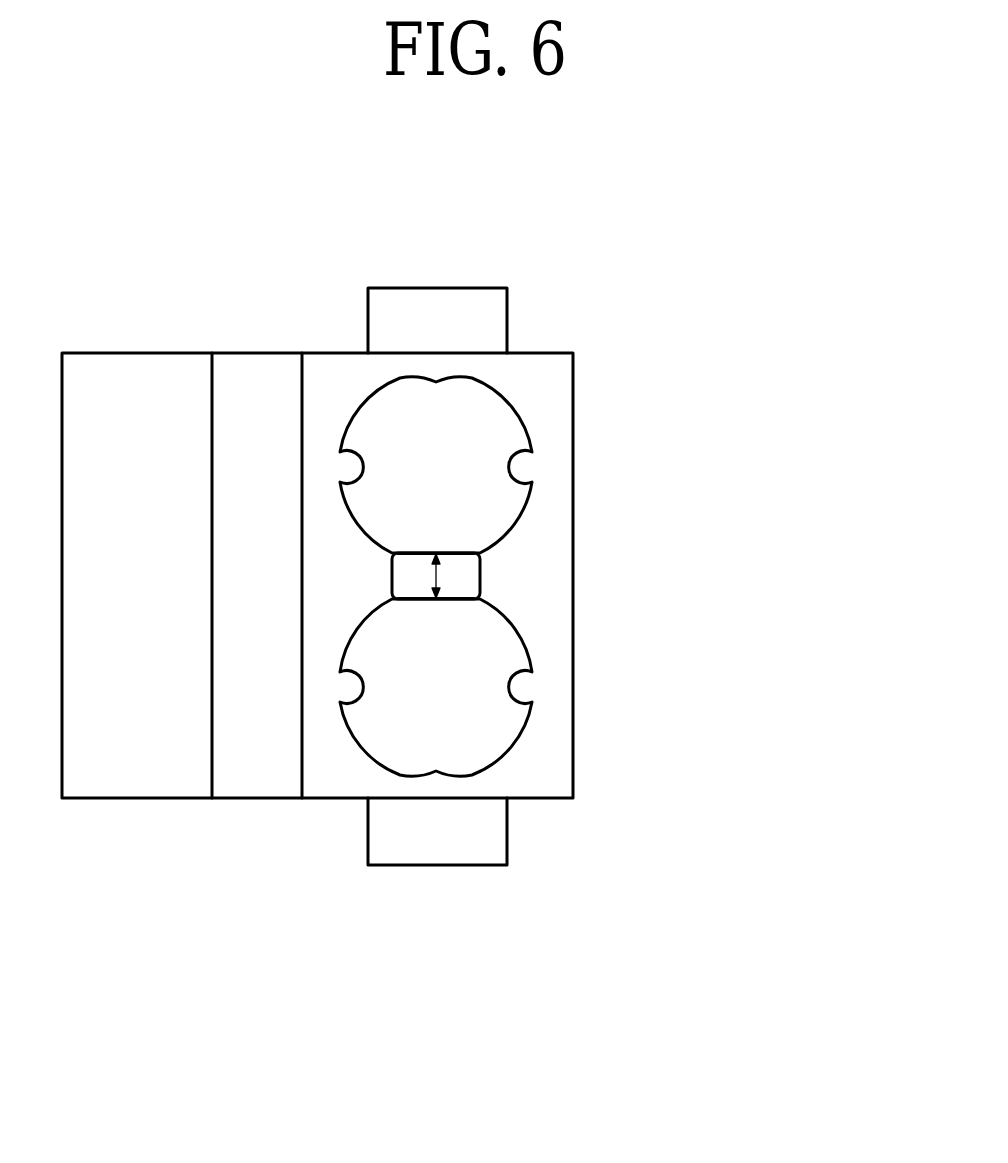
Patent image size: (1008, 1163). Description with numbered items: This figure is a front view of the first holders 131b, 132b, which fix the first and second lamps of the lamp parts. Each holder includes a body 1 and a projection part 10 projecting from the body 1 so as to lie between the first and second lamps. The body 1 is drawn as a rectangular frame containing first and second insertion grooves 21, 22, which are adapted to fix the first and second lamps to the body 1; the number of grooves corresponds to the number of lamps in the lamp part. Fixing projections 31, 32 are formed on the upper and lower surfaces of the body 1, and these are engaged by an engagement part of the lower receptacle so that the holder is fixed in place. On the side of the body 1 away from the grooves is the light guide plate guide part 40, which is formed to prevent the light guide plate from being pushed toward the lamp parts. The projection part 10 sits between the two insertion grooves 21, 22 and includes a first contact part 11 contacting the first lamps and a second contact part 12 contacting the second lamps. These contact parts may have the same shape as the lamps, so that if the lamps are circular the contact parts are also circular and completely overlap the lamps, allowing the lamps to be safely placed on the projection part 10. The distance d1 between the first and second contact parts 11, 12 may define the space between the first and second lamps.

The body 1 is at (320, 350).
The projection part 10 is at (538, 600).
The first contact part 11 is at (462, 551).
The second contact part 12 is at (476, 603).
The distance between first and second contact parts d1 is at (436, 572).
The first insertion groove 21 is at (487, 427).
The second insertion groove 22 is at (488, 738).
The fixing projection 31 is at (433, 310).
The fixing projection 32 is at (435, 842).
The light guide plate guide part 40 is at (135, 773).
The first holder 131b is at (787, 234).
The first holder 132b is at (890, 255).